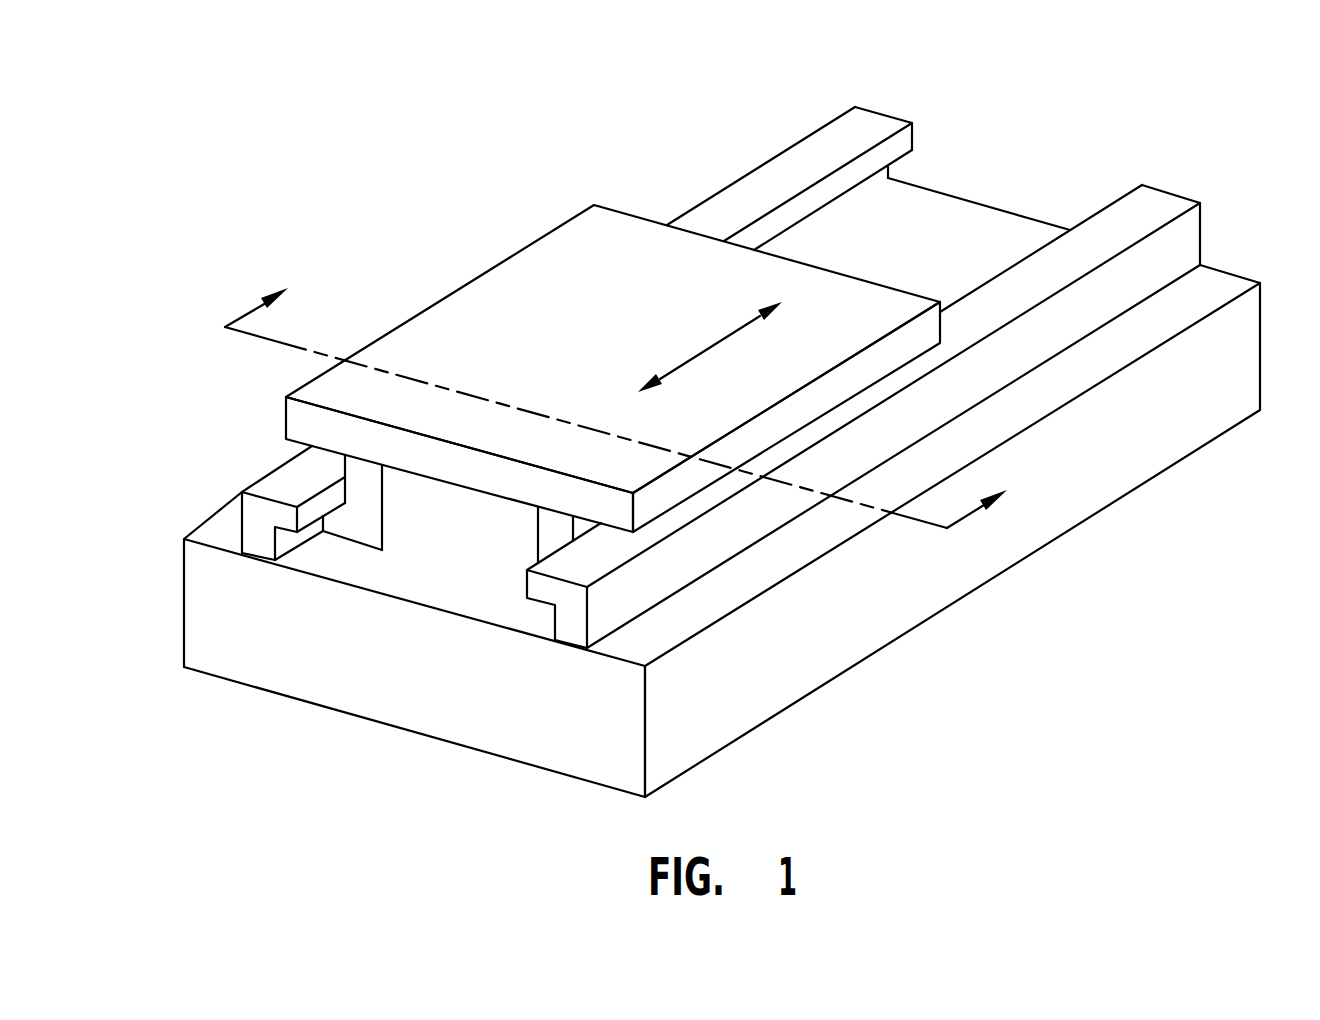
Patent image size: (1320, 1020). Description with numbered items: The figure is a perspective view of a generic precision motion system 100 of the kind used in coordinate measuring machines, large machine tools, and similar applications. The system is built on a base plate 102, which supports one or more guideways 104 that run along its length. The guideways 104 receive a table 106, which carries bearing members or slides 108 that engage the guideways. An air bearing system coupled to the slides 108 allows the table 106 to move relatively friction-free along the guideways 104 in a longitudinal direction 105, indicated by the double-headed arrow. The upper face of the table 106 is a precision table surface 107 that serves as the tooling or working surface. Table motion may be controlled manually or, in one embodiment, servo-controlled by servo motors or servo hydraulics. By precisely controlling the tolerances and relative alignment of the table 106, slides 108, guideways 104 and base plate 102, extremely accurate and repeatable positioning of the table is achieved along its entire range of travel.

The motion system 100 is at (282, 120).
The base plate 102 is at (950, 604).
The guideways 104 is at (885, 107).
The longitudinal direction 105 is at (712, 345).
The table 106 is at (613, 339).
The precision table surface 107 is at (600, 244).
The slides 108 is at (538, 536).